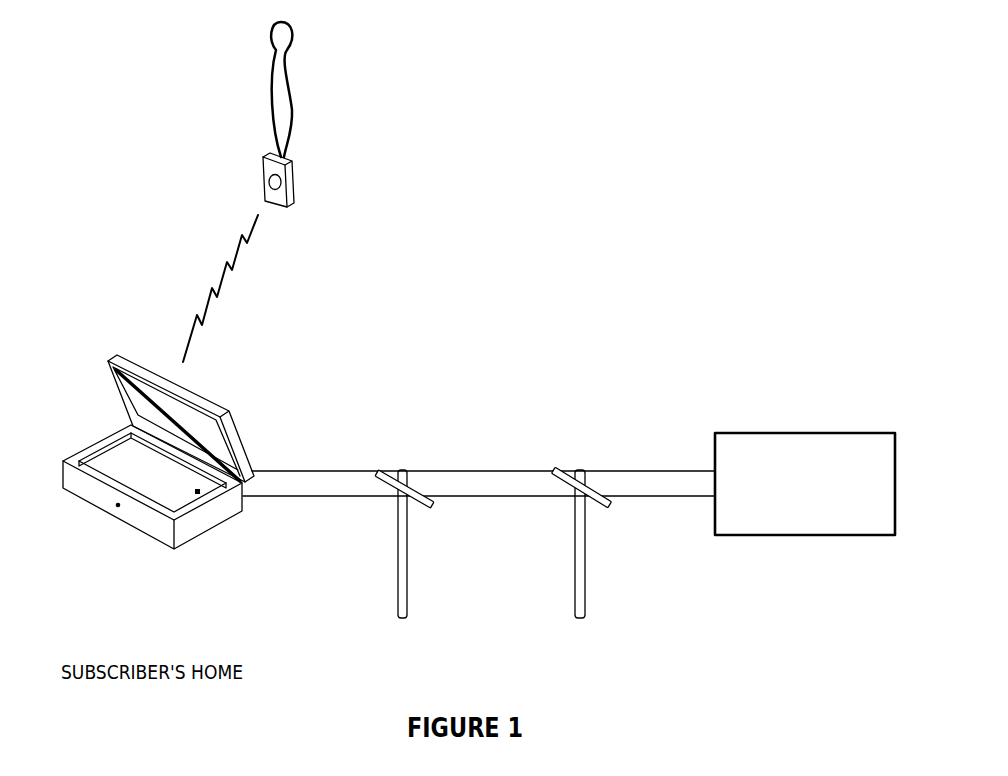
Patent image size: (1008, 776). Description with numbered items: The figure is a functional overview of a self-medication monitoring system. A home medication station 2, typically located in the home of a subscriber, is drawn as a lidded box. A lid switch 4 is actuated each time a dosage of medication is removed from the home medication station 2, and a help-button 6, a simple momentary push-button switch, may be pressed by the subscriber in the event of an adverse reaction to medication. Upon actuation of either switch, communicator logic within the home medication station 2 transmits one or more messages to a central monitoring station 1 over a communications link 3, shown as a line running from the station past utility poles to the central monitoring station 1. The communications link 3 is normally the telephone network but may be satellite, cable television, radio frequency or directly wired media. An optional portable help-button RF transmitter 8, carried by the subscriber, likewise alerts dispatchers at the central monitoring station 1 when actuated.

The central monitoring station 1 is at (833, 433).
The home medication station 2 is at (212, 465).
The communications link 3 is at (447, 470).
The lid switch 4 is at (114, 428).
The help-button 6 is at (197, 489).
The optional portable help-button RF transmitter 8 is at (293, 192).